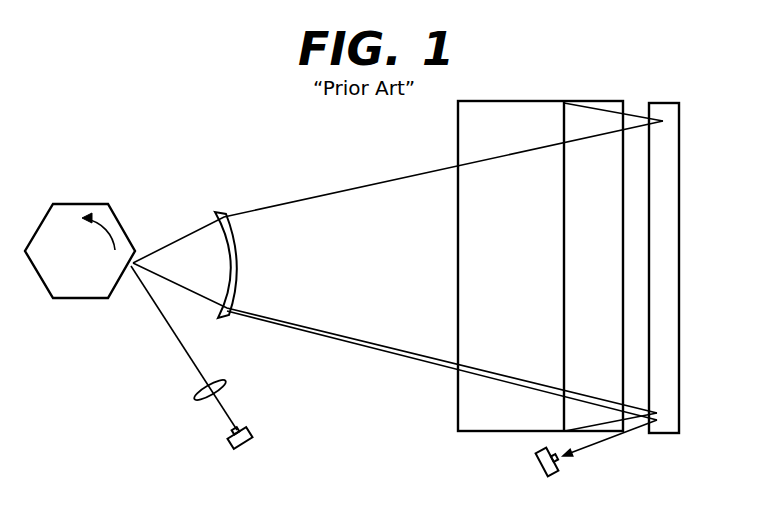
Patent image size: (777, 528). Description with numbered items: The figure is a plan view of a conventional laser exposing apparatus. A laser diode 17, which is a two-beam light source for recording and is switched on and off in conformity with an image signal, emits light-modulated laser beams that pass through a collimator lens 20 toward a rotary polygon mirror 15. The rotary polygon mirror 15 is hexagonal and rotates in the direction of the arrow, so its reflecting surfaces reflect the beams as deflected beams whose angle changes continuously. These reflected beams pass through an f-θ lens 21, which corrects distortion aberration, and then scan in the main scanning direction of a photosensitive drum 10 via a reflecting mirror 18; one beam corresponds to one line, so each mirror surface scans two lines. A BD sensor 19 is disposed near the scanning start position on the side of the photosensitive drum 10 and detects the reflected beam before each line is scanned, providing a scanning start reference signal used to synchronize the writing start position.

The photosensitive drum 10 is at (508, 101).
The rotary polygon mirror 15 is at (78, 298).
The laser diode 17 is at (228, 448).
The reflecting mirror 18 is at (679, 143).
The BD sensor 19 is at (537, 460).
The collimator lens 20 is at (195, 398).
The f-θ lens 21 is at (225, 215).